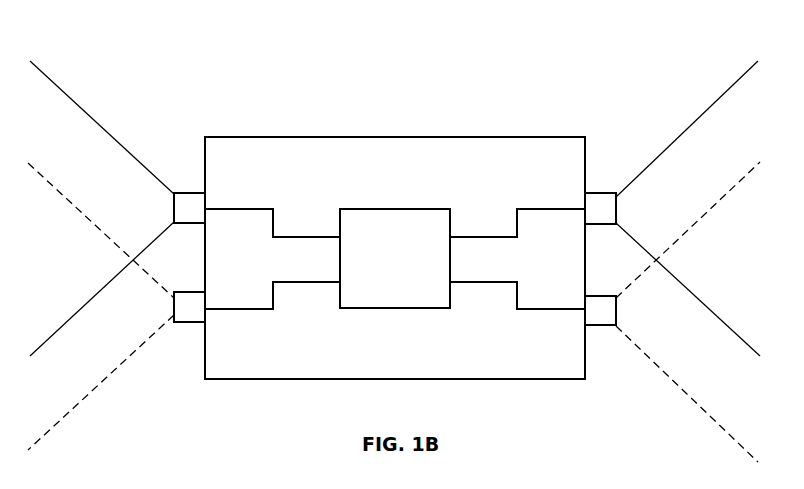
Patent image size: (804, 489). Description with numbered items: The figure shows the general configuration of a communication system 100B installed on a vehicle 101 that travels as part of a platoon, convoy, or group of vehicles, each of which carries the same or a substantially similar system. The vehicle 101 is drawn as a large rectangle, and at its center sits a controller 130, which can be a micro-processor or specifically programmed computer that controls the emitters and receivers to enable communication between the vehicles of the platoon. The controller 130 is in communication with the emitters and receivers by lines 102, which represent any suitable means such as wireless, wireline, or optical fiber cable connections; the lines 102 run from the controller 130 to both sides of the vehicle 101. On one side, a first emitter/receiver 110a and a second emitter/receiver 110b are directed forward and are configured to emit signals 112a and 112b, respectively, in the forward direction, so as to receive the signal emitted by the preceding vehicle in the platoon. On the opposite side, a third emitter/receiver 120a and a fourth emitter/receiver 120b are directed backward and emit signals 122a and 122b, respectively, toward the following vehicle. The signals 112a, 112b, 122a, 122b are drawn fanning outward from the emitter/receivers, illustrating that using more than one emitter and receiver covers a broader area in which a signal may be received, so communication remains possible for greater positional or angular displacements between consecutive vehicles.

The communication system 100B is at (408, 86).
The vehicle 101 is at (518, 137).
The lines 102 is at (310, 237).
The controller 130 is at (398, 209).
The first emitter/receiver 110a is at (187, 194).
The second emitter/receiver 110b is at (190, 323).
The third emitter/receiver 120a is at (598, 193).
The fourth emitter/receiver 120b is at (598, 327).
The signal 112a is at (95, 118).
The signal 112b is at (92, 390).
The signal 122a is at (695, 120).
The signal 122b is at (708, 413).